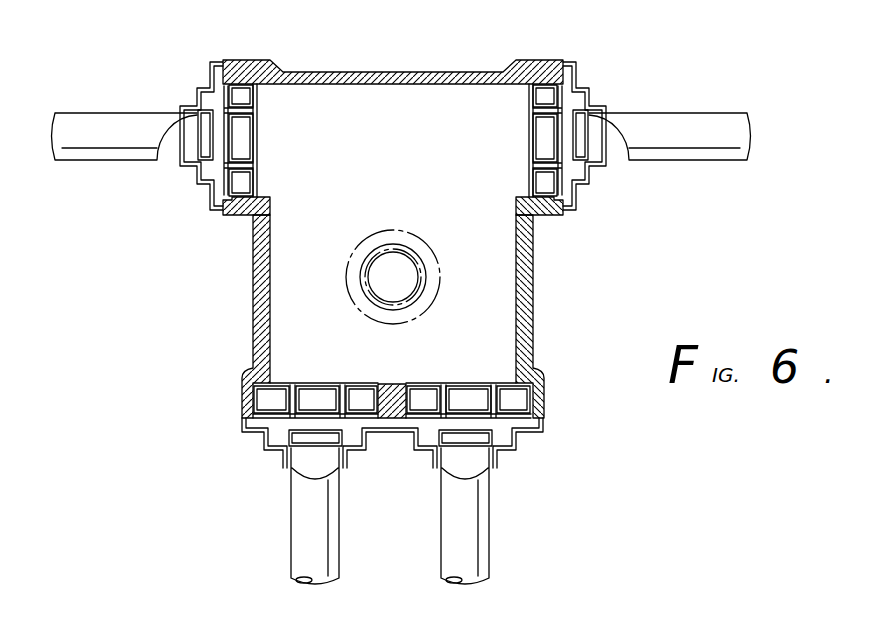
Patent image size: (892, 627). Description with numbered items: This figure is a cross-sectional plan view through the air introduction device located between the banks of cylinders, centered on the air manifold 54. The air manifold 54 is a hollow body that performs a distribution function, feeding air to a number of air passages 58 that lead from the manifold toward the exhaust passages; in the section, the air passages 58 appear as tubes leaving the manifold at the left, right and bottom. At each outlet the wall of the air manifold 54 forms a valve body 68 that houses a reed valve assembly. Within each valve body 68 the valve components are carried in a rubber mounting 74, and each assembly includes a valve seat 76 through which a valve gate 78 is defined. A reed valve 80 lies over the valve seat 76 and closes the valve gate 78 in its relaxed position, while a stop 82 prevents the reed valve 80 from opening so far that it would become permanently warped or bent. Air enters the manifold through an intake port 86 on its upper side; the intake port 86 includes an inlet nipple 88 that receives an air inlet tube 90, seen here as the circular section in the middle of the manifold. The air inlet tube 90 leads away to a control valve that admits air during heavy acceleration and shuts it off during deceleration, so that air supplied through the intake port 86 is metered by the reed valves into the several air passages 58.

The air manifold 54 is at (533, 278).
The air passages 58 is at (98, 116).
The valve body 68 is at (228, 58).
The rubber mounting 74 is at (253, 62).
The valve seat 76 is at (248, 172).
The valve gate 78 is at (248, 136).
The reed valve 80 is at (228, 134).
The stop 82 is at (175, 149).
The intake port 86 is at (398, 250).
The inlet nipple 88 is at (400, 247).
The air inlet tube 90 is at (433, 242).